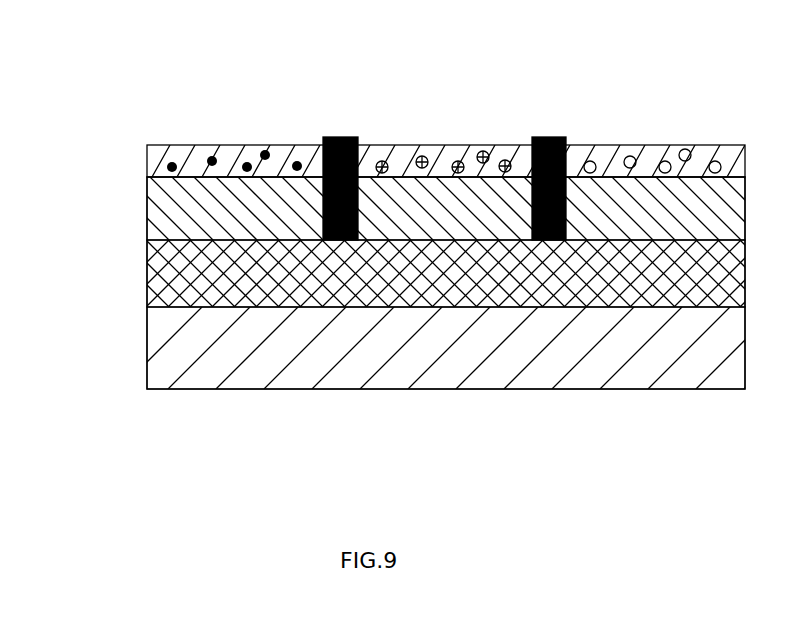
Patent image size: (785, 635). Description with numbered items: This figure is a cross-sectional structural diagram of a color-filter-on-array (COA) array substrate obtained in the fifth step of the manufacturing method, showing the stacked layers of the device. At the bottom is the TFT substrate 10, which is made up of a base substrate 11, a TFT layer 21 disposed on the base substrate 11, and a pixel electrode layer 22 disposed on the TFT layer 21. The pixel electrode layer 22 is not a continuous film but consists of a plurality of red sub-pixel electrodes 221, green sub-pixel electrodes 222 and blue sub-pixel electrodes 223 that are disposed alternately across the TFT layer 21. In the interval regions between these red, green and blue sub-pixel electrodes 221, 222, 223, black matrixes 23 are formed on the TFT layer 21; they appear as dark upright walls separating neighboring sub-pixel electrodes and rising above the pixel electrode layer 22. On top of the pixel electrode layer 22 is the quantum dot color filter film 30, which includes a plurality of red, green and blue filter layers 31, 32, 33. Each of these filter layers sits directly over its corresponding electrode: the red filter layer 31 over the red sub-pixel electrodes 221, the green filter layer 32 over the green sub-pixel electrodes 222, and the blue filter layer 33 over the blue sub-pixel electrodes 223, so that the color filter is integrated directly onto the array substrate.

The TFT substrate 10 is at (70, 178).
The base substrate 11 is at (165, 342).
The TFT layer 21 is at (164, 277).
The pixel electrode layer 22 is at (427, 327).
The red sub-pixel electrode 221 is at (210, 210).
The green sub-pixel electrode 222 is at (422, 212).
The blue sub-pixel electrode 223 is at (645, 210).
The black matrix 23 is at (548, 242).
The quantum dot color filter film 30 is at (444, 95).
The red filter layer 31 is at (198, 158).
The green filter layer 32 is at (412, 158).
The blue filter layer 33 is at (646, 129).